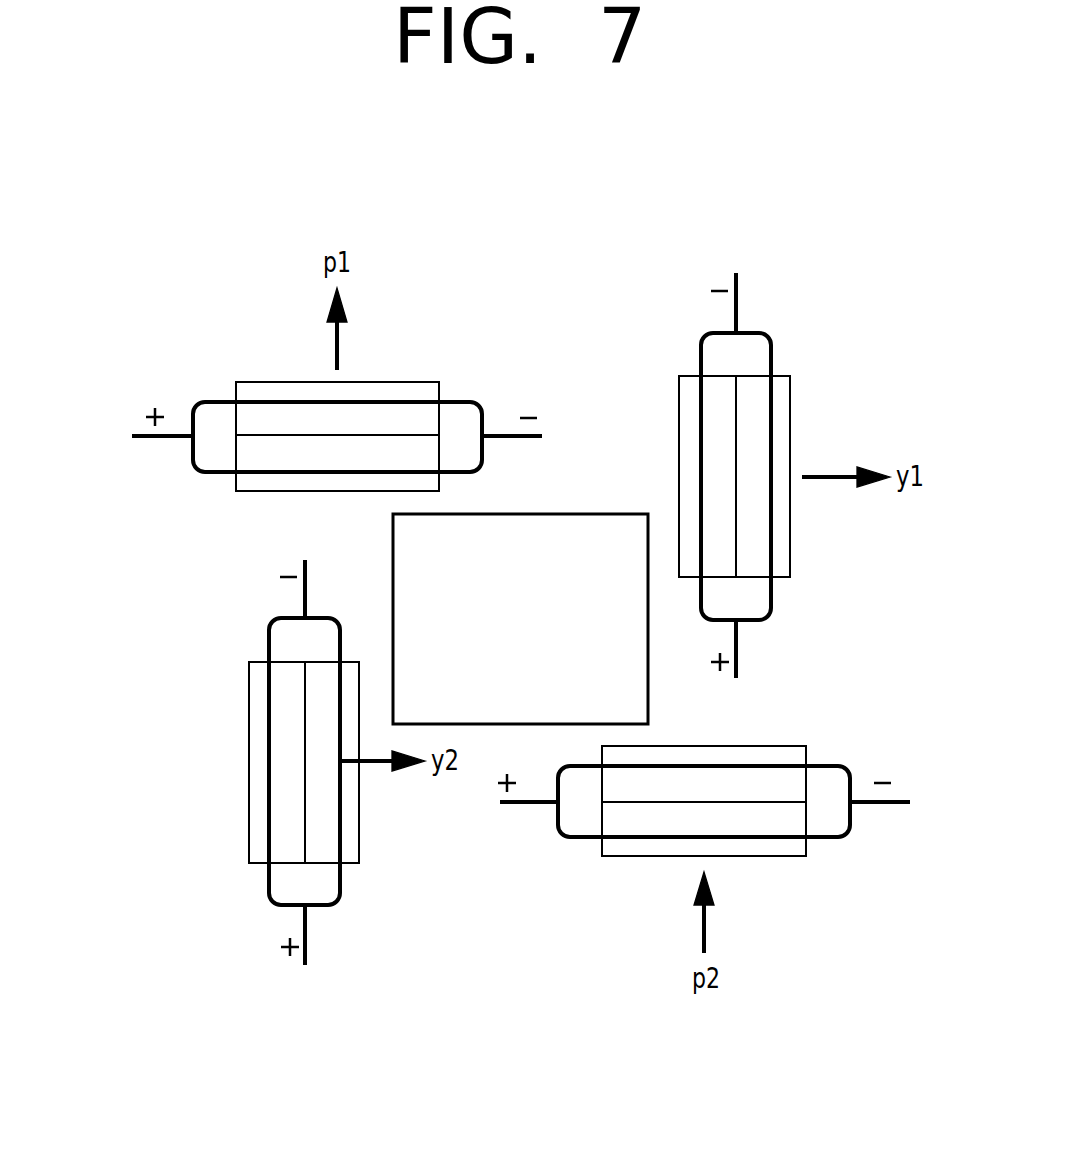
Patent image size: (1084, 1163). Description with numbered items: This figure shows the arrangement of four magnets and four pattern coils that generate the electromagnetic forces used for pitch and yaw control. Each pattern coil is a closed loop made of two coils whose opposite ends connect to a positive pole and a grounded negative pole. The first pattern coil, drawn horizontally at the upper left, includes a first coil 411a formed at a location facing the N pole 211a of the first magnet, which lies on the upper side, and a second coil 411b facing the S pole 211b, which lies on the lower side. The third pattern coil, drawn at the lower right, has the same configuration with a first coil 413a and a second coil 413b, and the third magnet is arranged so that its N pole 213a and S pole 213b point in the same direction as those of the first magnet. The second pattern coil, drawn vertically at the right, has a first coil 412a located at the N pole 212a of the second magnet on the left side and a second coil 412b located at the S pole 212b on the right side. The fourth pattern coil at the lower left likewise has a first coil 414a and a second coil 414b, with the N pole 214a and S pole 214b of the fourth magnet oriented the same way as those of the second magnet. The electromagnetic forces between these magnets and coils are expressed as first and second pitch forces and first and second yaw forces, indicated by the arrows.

The first coil 411a is at (197, 401).
The second coil 411b is at (193, 467).
The N pole 211a is at (412, 393).
The S pole 211b is at (418, 458).
The first coil 412a is at (702, 360).
The second coil 412b is at (770, 332).
The N pole 212a is at (718, 562).
The S pole 212b is at (780, 537).
The first coil 413a is at (588, 772).
The second coil 413b is at (588, 838).
The N pole 213a is at (777, 780).
The S pole 213b is at (757, 848).
The first coil 414a is at (268, 648).
The second coil 414b is at (270, 632).
The N pole 214a is at (258, 770).
The S pole 214b is at (325, 815).